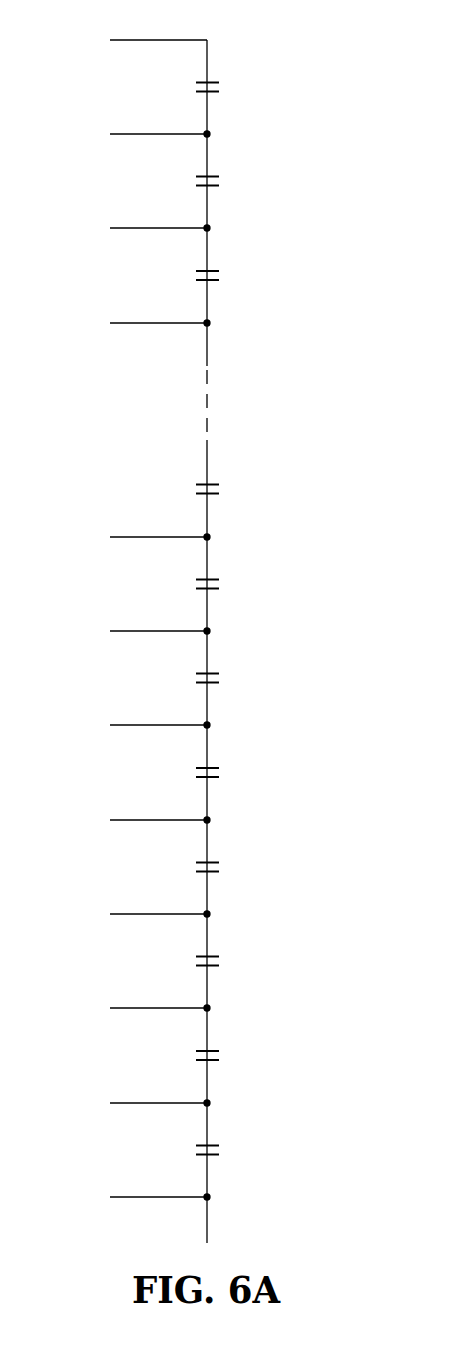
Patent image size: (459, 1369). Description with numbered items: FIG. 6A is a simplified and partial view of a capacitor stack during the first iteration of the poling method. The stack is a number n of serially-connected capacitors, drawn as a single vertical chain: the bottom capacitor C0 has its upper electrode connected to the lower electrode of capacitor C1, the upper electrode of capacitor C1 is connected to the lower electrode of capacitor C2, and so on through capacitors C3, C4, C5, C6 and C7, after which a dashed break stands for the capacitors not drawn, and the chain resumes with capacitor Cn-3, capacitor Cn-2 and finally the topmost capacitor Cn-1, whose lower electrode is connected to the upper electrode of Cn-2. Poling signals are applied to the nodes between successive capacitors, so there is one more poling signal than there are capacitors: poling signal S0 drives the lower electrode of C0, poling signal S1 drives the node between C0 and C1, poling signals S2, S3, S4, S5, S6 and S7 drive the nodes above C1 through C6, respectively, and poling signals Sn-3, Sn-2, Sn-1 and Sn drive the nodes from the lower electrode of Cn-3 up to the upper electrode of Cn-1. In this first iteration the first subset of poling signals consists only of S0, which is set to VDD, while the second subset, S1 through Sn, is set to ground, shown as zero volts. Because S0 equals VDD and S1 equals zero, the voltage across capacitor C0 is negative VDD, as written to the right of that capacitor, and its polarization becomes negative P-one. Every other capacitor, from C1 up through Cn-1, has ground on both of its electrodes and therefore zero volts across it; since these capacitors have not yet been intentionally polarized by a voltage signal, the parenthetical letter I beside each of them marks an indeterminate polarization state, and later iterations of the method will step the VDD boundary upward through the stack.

The poling signal Sn is at (128, 41).
The poling signal Sn-1 is at (122, 135).
The poling signal Sn-2 is at (122, 229).
The poling signal Sn-3 is at (122, 324).
The poling signal S7 is at (130, 538).
The poling signal S6 is at (130, 632).
The poling signal S5 is at (130, 726).
The poling signal S4 is at (130, 821).
The poling signal S3 is at (130, 915).
The poling signal S2 is at (130, 1009).
The poling signal S1 is at (130, 1104).
The poling signal S0 is at (118, 1198).
The capacitor Cn-1 is at (211, 86).
The capacitor Cn-2 is at (211, 180).
The capacitor Cn-3 is at (211, 275).
The capacitor C7 is at (217, 488).
The capacitor C6 is at (217, 583).
The capacitor C5 is at (217, 677).
The capacitor C4 is at (217, 772).
The capacitor C3 is at (217, 866).
The capacitor C2 is at (217, 960).
The capacitor C1 is at (217, 1055).
The capacitor C0 is at (242, 1150).